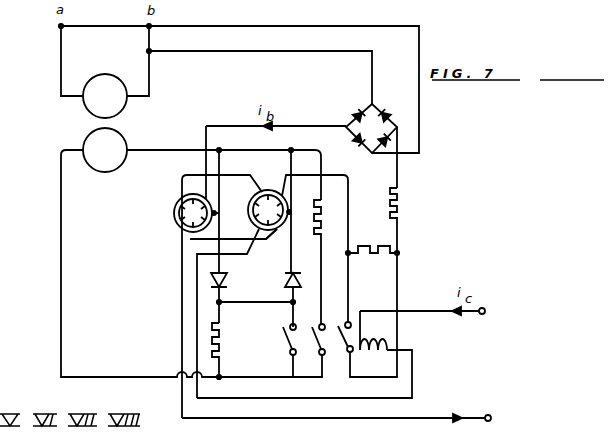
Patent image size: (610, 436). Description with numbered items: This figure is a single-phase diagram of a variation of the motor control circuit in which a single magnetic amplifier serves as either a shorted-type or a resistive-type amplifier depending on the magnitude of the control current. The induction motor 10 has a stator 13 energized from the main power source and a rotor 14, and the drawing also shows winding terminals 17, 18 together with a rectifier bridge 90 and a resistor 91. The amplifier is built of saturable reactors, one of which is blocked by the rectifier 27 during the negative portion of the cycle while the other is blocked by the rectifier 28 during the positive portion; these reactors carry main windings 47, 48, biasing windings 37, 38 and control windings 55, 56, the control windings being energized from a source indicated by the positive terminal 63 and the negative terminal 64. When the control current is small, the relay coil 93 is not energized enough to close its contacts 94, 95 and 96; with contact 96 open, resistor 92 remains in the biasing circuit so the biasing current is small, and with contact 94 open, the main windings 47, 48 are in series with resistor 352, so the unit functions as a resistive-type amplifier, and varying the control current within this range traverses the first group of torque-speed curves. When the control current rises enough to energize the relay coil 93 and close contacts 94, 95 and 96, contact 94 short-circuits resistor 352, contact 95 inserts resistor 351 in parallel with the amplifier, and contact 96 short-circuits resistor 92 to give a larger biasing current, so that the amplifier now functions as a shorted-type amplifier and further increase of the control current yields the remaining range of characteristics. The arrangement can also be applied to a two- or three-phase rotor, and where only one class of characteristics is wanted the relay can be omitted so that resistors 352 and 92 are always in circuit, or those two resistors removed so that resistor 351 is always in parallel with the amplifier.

The induction motor 10 is at (78, 113).
The stator 13 is at (113, 75).
The rotor 14 is at (107, 169).
The winding terminal 17 is at (137, 138).
The winding terminal 18 is at (72, 139).
The rectifier 27 is at (229, 282).
The rectifier 28 is at (288, 285).
The biasing winding 37 is at (182, 193).
The biasing winding 38 is at (268, 190).
The main winding 47 is at (219, 213).
The main winding 48 is at (293, 215).
The control winding 55 is at (180, 234).
The control winding 56 is at (280, 236).
The positive terminal 63 is at (453, 314).
The negative terminal 64 is at (509, 420).
The rectifier bridge 90 is at (360, 115).
The resistor 91 is at (408, 203).
The resistor 92 is at (371, 258).
The relay coil 93 is at (390, 340).
The contact 94 is at (288, 352).
The contact 95 is at (312, 346).
The contact 96 is at (340, 347).
The resistor 351 is at (333, 221).
The resistor 352 is at (229, 349).